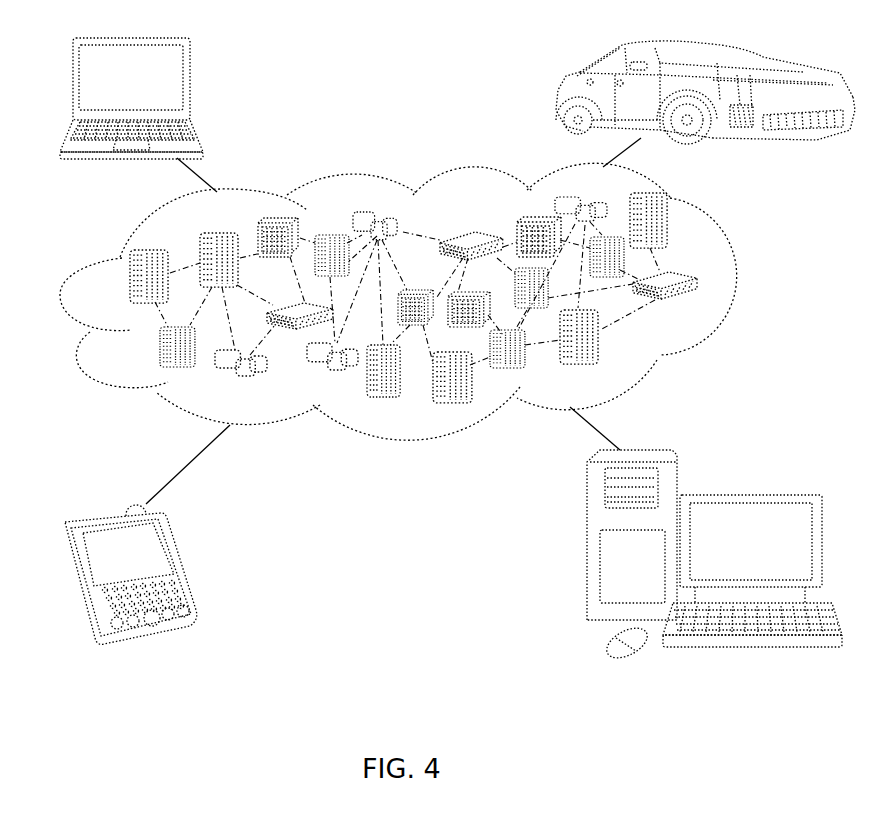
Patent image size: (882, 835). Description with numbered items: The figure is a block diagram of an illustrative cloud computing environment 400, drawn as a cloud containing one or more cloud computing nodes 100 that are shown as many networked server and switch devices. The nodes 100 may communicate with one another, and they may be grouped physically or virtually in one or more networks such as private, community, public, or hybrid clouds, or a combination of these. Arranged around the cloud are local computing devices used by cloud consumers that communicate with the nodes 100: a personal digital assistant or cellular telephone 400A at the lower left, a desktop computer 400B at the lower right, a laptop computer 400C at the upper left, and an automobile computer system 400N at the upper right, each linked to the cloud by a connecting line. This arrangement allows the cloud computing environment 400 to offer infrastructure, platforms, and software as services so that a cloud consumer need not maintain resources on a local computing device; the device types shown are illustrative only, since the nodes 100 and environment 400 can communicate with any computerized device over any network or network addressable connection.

The laptop computer 400C is at (190, 84).
The automobile computer system 400N is at (562, 100).
The cloud computing environment 400 is at (437, 301).
The cloud computing nodes 100 is at (708, 310).
The personal digital assistant (PDA) or cellular telephone 400A is at (180, 563).
The desktop computer 400B is at (750, 492).